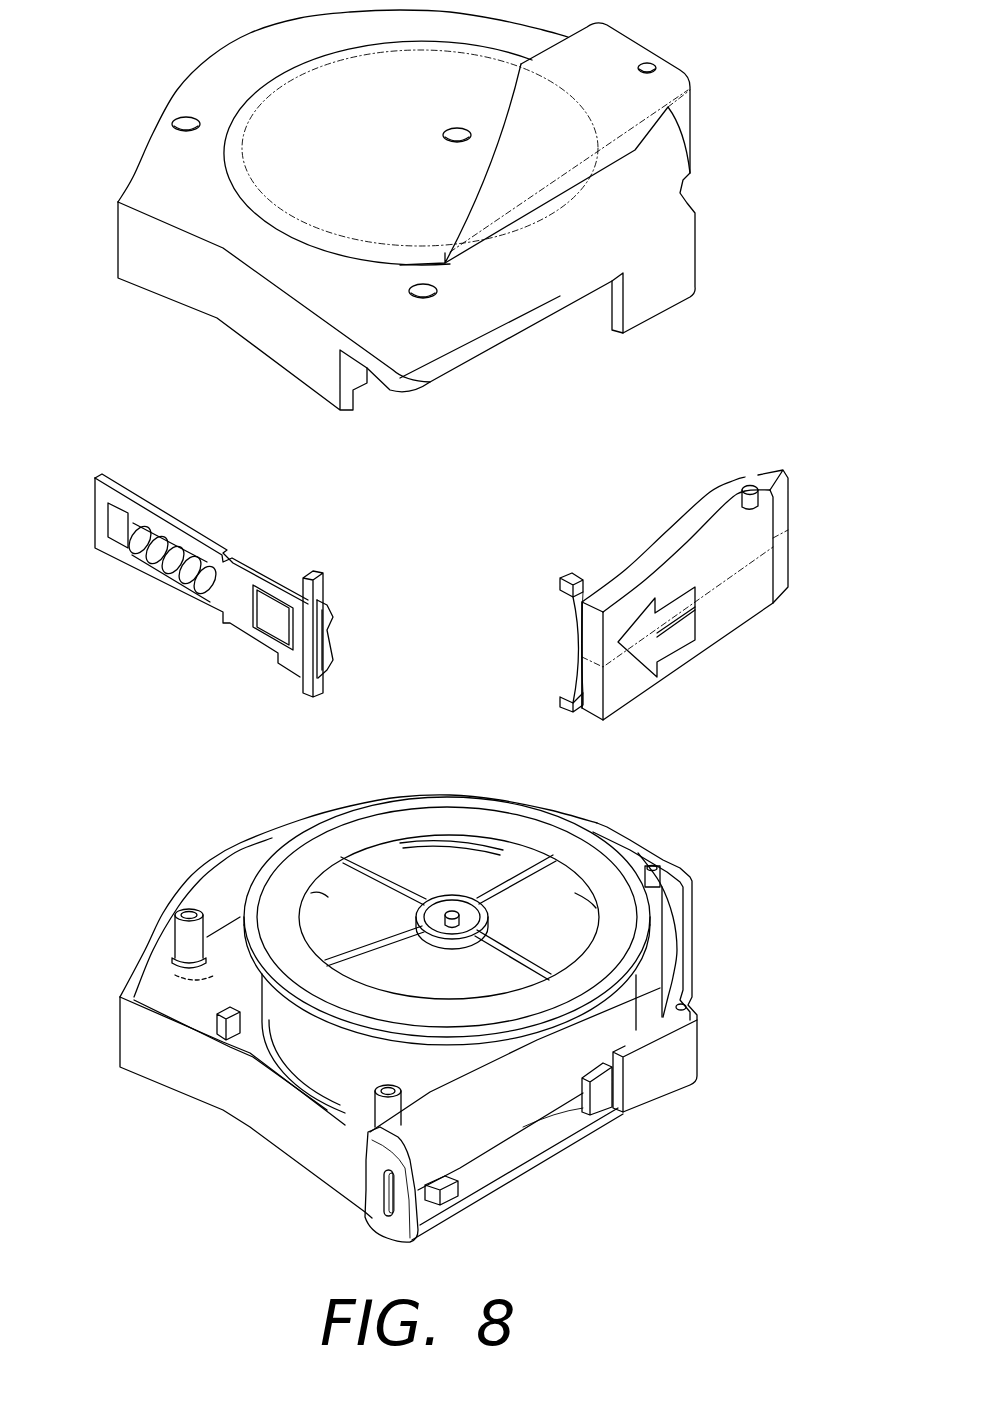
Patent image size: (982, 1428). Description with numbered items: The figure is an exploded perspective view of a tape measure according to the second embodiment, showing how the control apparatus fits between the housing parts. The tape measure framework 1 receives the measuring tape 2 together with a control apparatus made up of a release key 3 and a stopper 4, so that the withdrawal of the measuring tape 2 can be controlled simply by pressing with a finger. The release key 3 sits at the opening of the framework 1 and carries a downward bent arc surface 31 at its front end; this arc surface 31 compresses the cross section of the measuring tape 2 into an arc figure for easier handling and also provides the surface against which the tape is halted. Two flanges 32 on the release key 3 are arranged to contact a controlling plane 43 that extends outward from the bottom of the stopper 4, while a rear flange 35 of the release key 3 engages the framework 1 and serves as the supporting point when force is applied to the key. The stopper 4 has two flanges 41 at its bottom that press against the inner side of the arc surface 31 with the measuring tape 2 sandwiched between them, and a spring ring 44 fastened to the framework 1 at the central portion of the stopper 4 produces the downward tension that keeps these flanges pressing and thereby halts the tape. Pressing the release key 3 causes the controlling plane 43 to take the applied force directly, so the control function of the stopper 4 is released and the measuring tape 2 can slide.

The tape measure framework 1 is at (653, 305).
The measuring tape 2 is at (440, 1143).
The release key 3 is at (665, 606).
The arc surface 31 is at (577, 680).
The flanges 32 is at (560, 700).
The rear flange 35 is at (777, 488).
The stopper 4 is at (232, 598).
The flanges 41 is at (333, 615).
The controlling plane 43 is at (305, 695).
The spring ring 44 is at (150, 562).